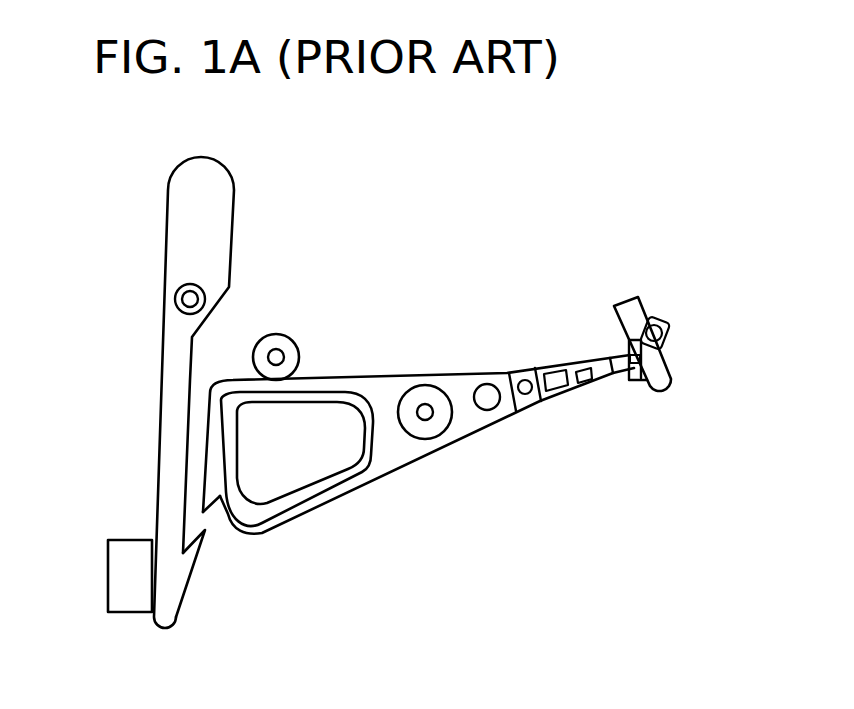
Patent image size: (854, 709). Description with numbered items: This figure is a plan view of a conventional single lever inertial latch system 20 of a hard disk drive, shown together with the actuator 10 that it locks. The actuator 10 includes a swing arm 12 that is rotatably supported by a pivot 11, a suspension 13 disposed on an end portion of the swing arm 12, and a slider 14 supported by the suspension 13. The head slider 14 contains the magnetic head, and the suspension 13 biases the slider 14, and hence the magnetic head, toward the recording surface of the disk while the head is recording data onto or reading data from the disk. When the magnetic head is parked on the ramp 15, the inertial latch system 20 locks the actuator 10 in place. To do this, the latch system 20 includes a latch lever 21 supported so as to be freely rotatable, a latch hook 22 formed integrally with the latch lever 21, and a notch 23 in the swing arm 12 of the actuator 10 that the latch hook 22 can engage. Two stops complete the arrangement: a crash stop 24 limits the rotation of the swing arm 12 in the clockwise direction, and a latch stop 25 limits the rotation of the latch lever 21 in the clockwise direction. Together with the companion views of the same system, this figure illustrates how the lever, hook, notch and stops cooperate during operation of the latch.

The actuator 10 is at (374, 394).
The pivot 11 is at (424, 410).
The swing arm 12 is at (468, 428).
The suspension 13 is at (597, 380).
The slider 14 is at (628, 355).
The ramp 15 is at (668, 362).
The single lever inertial latch system 20 is at (203, 392).
The latch lever 21 is at (172, 365).
The latch hook 22 is at (195, 551).
The notch 23 is at (206, 498).
The crash stop 24 is at (287, 335).
The latch stop 25 is at (126, 545).